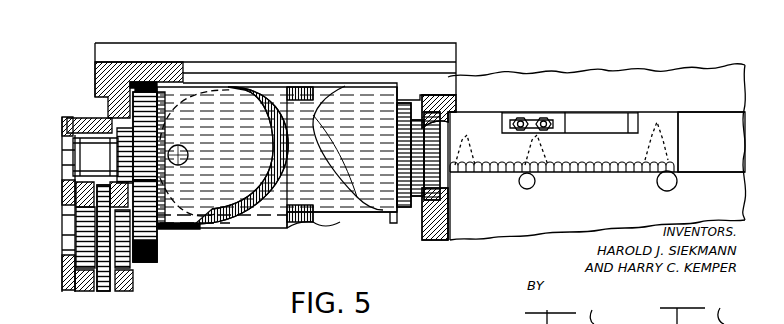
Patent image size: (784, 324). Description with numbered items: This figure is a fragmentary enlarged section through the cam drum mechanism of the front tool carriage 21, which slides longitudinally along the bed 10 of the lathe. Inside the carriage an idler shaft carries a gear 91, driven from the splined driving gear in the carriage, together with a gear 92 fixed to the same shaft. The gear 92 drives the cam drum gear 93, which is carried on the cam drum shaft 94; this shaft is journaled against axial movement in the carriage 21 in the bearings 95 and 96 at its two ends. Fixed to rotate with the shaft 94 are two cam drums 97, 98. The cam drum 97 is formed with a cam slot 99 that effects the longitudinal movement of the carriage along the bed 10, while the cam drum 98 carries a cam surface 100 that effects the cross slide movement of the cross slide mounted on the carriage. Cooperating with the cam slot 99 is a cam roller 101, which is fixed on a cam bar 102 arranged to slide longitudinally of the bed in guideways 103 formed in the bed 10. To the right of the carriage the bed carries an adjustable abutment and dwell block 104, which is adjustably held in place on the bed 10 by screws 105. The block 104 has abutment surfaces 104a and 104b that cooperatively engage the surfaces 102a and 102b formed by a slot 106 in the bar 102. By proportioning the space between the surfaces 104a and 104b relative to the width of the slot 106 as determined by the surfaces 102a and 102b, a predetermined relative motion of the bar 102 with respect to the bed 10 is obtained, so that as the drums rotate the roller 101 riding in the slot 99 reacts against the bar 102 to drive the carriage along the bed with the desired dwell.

The bed 10 is at (727, 86).
The front tool carriage 21 is at (95, 70).
The gear 91 is at (103, 290).
The gear 92 is at (143, 262).
The cam drum gear 93 is at (143, 92).
The cam drum shaft 94 is at (103, 155).
The bearing 95 is at (107, 115).
The bearing 96 is at (456, 95).
The cam drum 97 is at (245, 225).
The cam drum 98 is at (370, 90).
The cam slot 99 is at (178, 224).
The cam surface 100 is at (350, 199).
The cam roller 101 is at (200, 146).
The cam bar 102 is at (583, 168).
The surface 102a is at (632, 112).
The surface 102b is at (507, 115).
The guideways 103 is at (715, 113).
The adjustable abutment and dwell block 104 is at (553, 126).
The abutment surface 104a is at (570, 113).
The abutment surface 104b is at (502, 126).
The screws 105 is at (545, 130).
The slot 106 is at (613, 127).